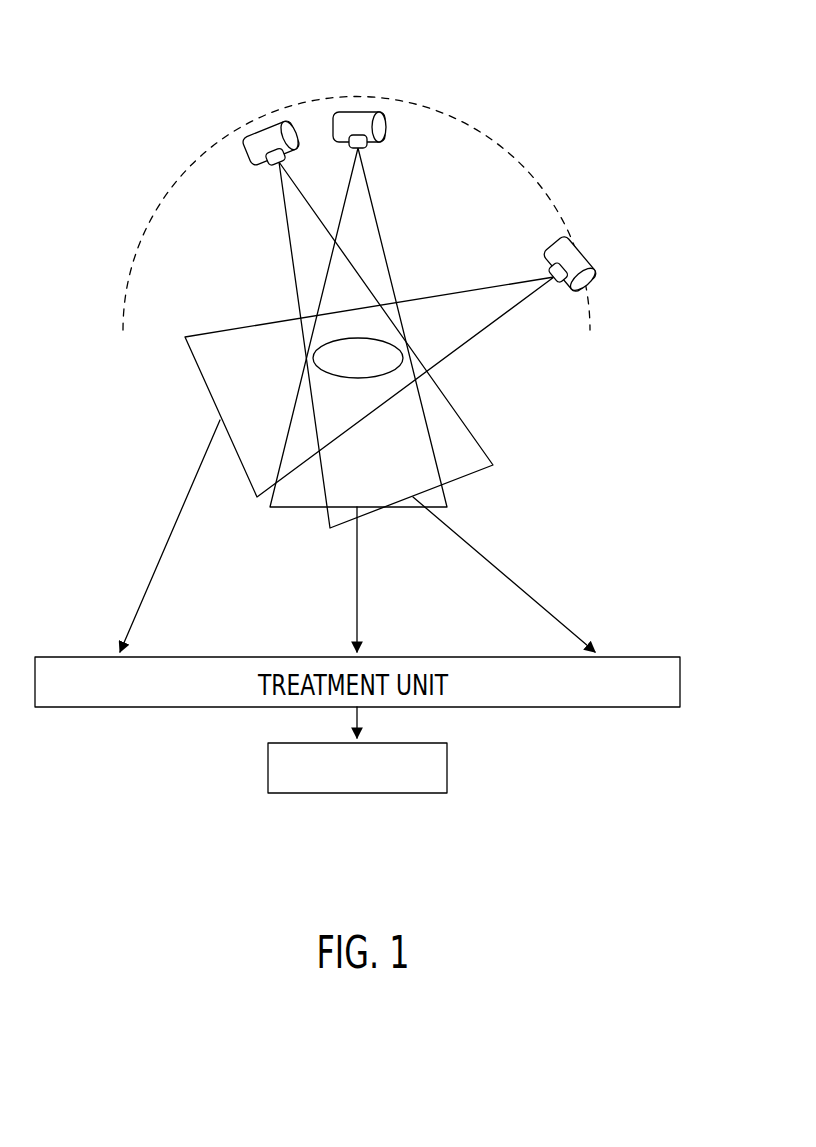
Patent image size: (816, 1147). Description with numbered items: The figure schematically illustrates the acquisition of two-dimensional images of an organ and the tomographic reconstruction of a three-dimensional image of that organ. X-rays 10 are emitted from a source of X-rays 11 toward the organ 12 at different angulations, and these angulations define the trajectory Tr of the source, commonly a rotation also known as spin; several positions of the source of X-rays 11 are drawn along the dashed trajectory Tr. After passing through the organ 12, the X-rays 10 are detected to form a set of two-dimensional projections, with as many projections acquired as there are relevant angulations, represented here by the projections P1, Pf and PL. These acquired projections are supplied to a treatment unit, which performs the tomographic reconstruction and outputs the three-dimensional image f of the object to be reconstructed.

The X-rays 10 is at (290, 230).
The source of X-rays 11 is at (263, 138).
The organ 12 is at (327, 357).
The trajectory of the source Tr is at (500, 172).
The first 2D projection P1 is at (164, 536).
The 2D projection Pf is at (343, 579).
The L-th 2D projection PL is at (504, 574).
The 3D image of the object to be reconstructed f is at (268, 772).